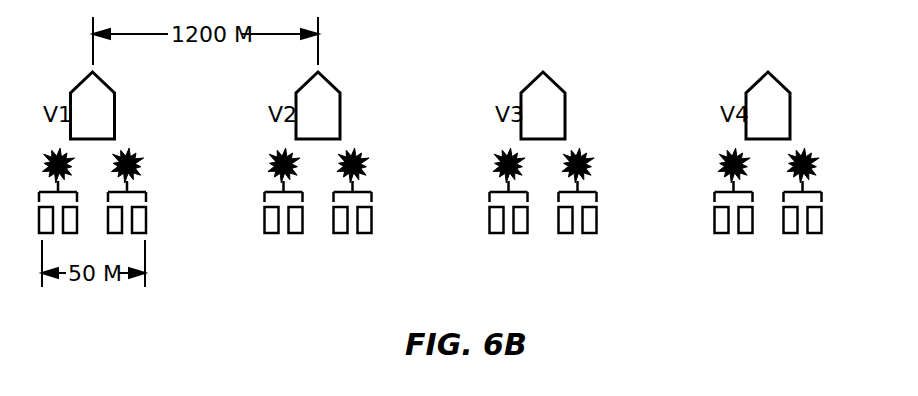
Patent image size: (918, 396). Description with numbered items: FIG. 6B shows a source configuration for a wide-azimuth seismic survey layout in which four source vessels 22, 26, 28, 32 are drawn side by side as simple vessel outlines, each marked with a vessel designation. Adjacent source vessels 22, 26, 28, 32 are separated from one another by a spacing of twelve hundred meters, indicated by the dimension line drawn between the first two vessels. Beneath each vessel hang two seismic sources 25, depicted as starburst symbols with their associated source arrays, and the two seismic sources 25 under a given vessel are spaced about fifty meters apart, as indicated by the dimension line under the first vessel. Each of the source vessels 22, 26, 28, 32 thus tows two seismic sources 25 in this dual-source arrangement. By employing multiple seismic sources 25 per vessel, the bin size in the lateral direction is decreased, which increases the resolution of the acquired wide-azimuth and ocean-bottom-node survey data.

The source vessel 22 is at (114, 113).
The source vessel 26 is at (340, 113).
The source vessel 28 is at (565, 113).
The source vessel 32 is at (790, 113).
The seismic source 25 is at (815, 162).